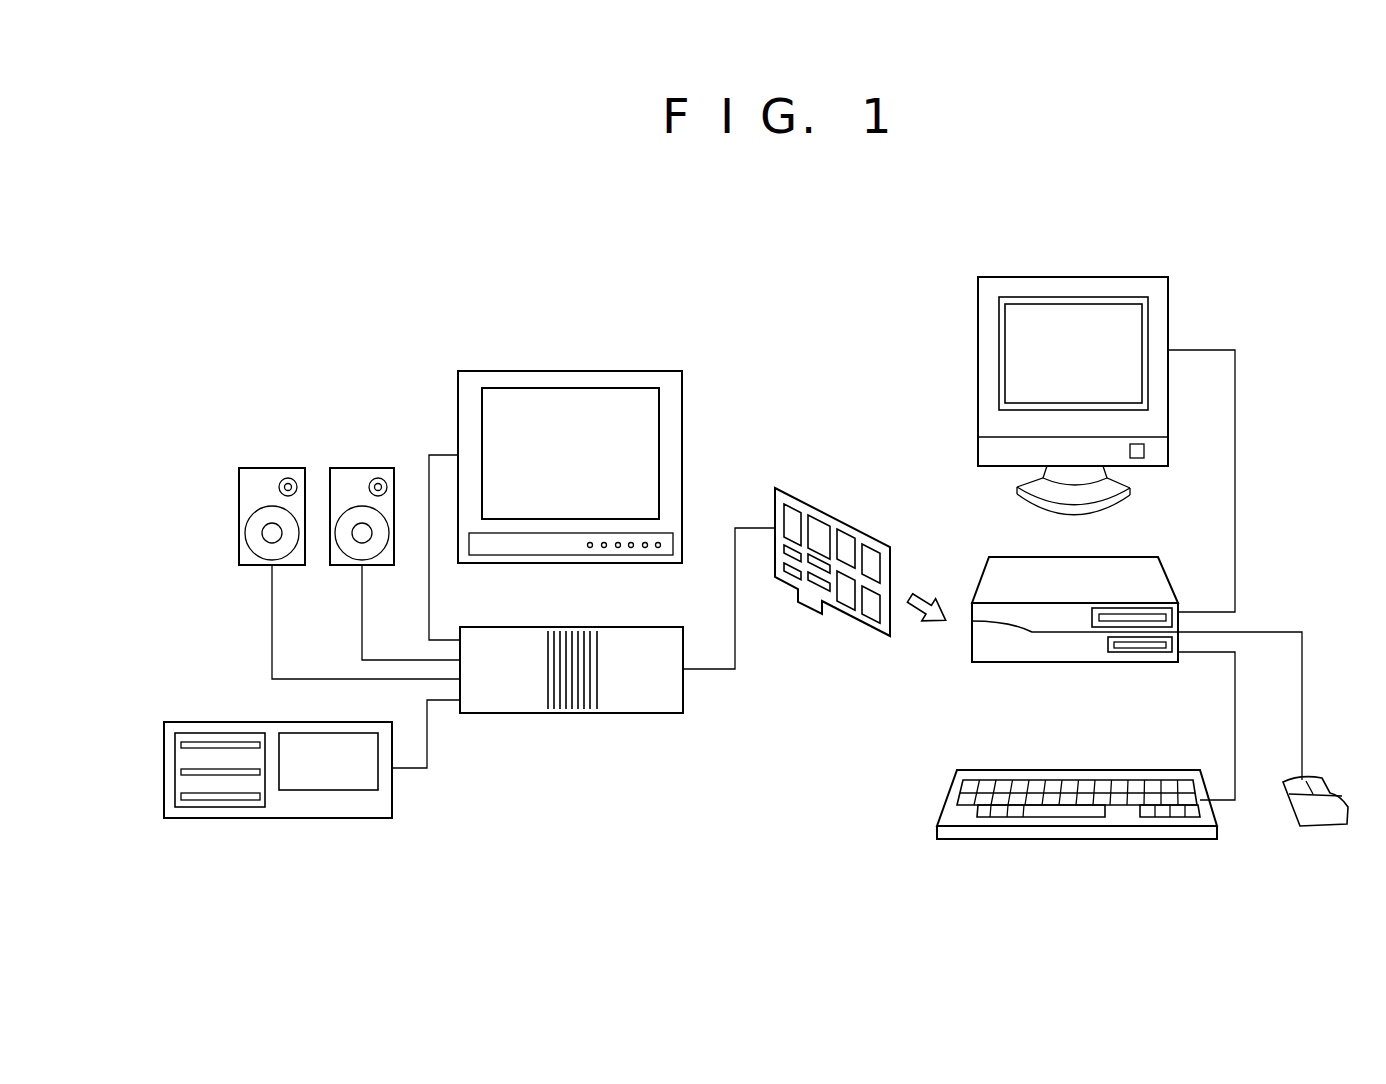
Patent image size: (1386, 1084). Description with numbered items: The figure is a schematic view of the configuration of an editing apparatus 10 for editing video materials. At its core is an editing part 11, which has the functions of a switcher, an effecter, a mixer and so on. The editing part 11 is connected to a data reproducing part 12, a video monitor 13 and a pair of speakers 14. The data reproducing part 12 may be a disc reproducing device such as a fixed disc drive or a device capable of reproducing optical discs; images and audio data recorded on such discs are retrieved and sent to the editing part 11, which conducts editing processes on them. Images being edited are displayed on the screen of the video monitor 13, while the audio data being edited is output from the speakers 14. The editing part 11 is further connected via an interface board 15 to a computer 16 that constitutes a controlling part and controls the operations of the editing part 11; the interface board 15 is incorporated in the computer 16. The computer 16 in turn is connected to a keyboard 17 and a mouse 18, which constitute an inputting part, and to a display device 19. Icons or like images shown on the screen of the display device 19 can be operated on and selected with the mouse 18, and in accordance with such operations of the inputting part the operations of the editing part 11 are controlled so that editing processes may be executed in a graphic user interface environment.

The editing apparatus 10 is at (418, 296).
The editing part 11 is at (613, 715).
The data reproducing part 12 is at (293, 820).
The video monitor 13 is at (580, 371).
The speakers 14 is at (355, 468).
The interface board 15 is at (827, 512).
The computer 16 is at (1017, 663).
The keyboard 17 is at (980, 840).
The mouse 18 is at (1318, 828).
The display device 19 is at (1093, 277).